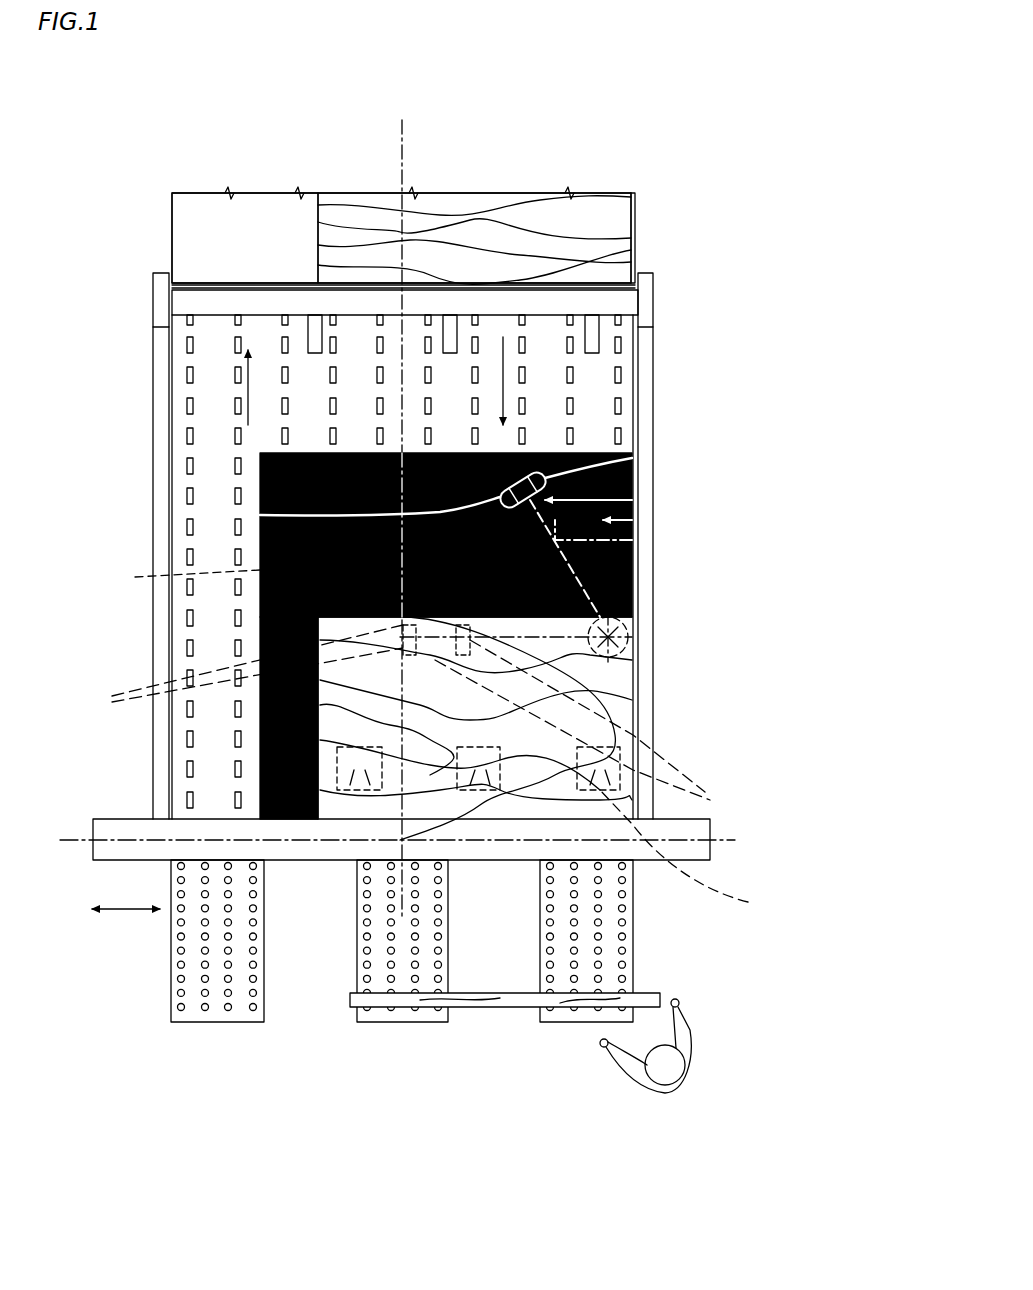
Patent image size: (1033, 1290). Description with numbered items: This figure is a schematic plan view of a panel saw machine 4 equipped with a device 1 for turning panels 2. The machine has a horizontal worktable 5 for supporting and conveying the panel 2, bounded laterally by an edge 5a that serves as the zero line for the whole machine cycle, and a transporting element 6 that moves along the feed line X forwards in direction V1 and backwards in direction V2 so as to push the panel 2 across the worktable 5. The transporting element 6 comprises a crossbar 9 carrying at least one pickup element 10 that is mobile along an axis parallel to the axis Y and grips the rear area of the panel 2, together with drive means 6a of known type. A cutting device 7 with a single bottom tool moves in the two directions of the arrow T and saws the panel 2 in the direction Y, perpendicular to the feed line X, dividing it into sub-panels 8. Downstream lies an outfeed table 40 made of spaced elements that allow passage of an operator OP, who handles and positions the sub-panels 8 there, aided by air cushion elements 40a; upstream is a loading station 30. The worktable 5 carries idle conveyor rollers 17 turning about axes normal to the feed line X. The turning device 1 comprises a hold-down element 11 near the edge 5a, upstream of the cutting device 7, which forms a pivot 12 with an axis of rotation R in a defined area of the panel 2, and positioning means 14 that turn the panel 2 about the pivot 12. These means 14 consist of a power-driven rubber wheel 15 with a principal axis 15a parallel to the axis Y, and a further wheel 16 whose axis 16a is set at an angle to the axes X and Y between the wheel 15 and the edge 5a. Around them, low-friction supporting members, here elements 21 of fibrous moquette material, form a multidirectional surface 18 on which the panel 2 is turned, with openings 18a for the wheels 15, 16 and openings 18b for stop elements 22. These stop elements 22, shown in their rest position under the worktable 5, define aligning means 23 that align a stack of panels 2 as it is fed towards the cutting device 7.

The panel turning device 1 is at (712, 414).
The panel 2 is at (596, 218).
The panel saw machine 4 is at (662, 236).
The horizontal worktable 5 is at (197, 542).
The edge 5a is at (640, 402).
The transporting element 6 is at (187, 295).
The drive means 6a is at (143, 311).
The cutting device 7 is at (190, 830).
The sub-panels 8 is at (612, 1000).
The crossbar 9 is at (210, 310).
The pickup element 10 is at (595, 325).
The hold-down element 11 is at (632, 625).
The pivot 12 is at (632, 640).
The positioning means 14 is at (655, 497).
The roller or rubber wheel 15 is at (244, 667).
The principal axis 15a is at (633, 715).
The wheel 16 is at (552, 484).
The axis 16a is at (655, 540).
The idle conveyor rollers 17 is at (190, 492).
The multidirectional surface 18 is at (272, 776).
The openings 18a is at (260, 528).
The openings 18b is at (700, 854).
The elements made of fibrous material 21 is at (655, 517).
The stop elements 22 is at (383, 792).
The aligning means 23 is at (345, 792).
The loading table or station 30 is at (256, 216).
The outfeed table 40 is at (545, 1022).
The air cushion elements 40a is at (205, 1008).
The feed line X is at (402, 250).
The sawing direction Y is at (80, 840).
The arrow indicating cutting device directions T is at (115, 915).
The axis of rotation R is at (632, 640).
The forward feed direction V1 is at (503, 382).
The backward feed direction V2 is at (248, 388).
The operator OP is at (690, 1085).